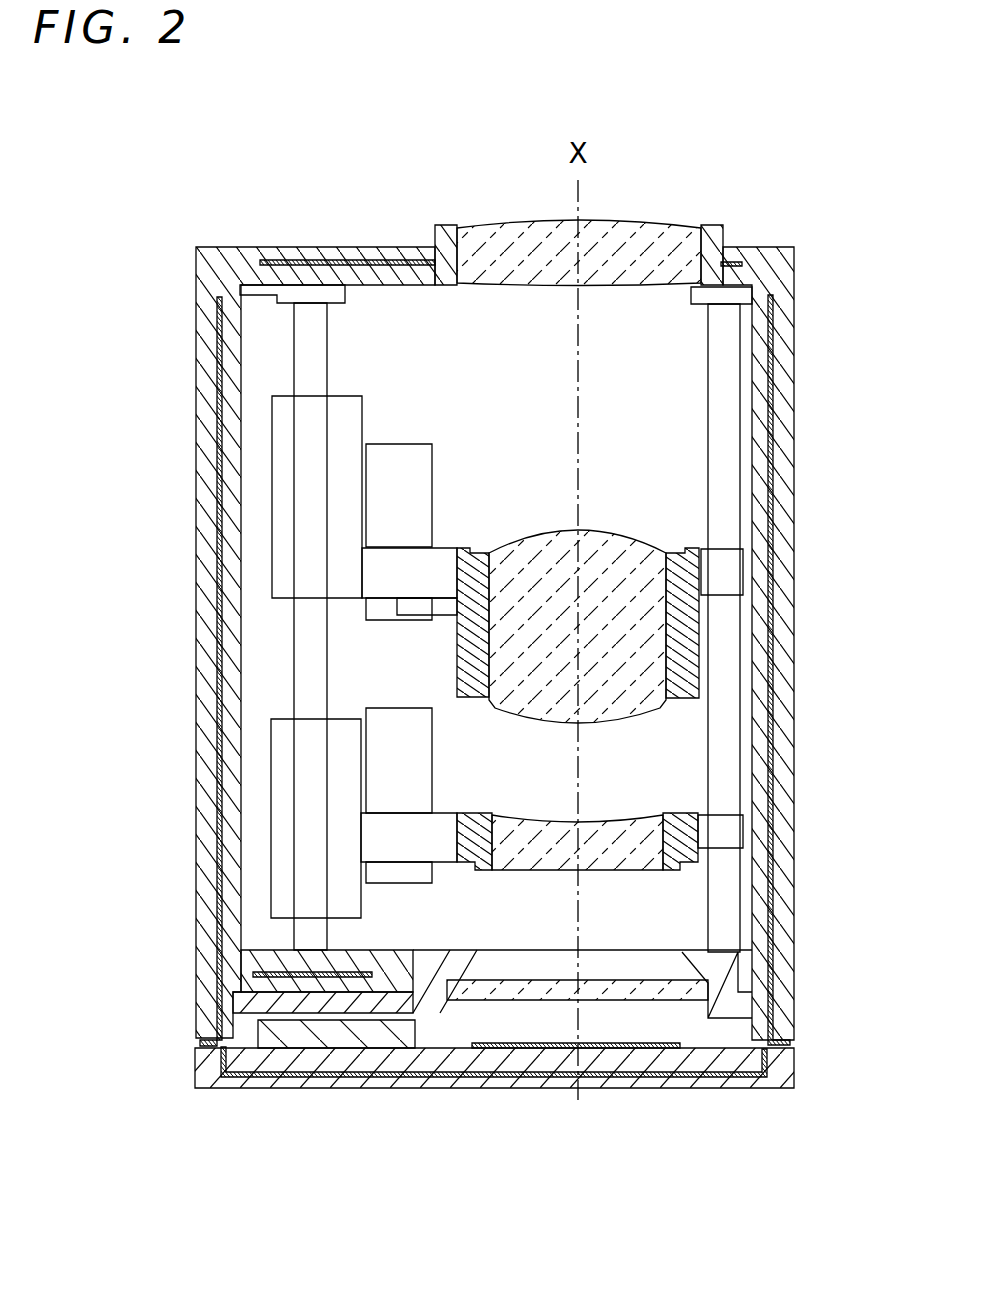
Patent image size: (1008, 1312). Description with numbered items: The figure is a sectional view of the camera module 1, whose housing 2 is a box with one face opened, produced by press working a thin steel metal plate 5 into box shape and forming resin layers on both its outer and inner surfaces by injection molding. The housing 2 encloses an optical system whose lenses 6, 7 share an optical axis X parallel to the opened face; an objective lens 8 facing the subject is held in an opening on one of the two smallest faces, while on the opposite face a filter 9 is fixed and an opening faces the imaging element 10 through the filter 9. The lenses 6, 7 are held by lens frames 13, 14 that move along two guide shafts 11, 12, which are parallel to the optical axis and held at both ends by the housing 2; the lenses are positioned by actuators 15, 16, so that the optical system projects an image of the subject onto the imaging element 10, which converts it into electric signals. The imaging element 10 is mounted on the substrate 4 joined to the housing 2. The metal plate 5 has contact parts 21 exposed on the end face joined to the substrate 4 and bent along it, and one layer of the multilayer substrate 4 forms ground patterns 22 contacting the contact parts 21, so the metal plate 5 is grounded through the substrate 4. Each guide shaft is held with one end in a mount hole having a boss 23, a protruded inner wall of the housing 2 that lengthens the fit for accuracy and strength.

The camera module 1 is at (307, 182).
The housing 2 is at (243, 247).
The substrate 4 is at (425, 1091).
The metal plate 5 is at (387, 260).
The lens 6 is at (640, 545).
The lens 7 is at (618, 820).
The objective lens 8 is at (652, 228).
The filter 9 is at (513, 995).
The imaging element 10 is at (578, 1050).
The guide shaft 11 is at (298, 347).
The guide shaft 12 is at (728, 392).
The lens frame 13 is at (697, 650).
The lens frame 14 is at (697, 857).
The actuator 15 is at (380, 496).
The actuator 16 is at (380, 712).
The contact part 21 is at (792, 1043).
The ground pattern 22 is at (790, 1050).
The boss 23 is at (290, 298).